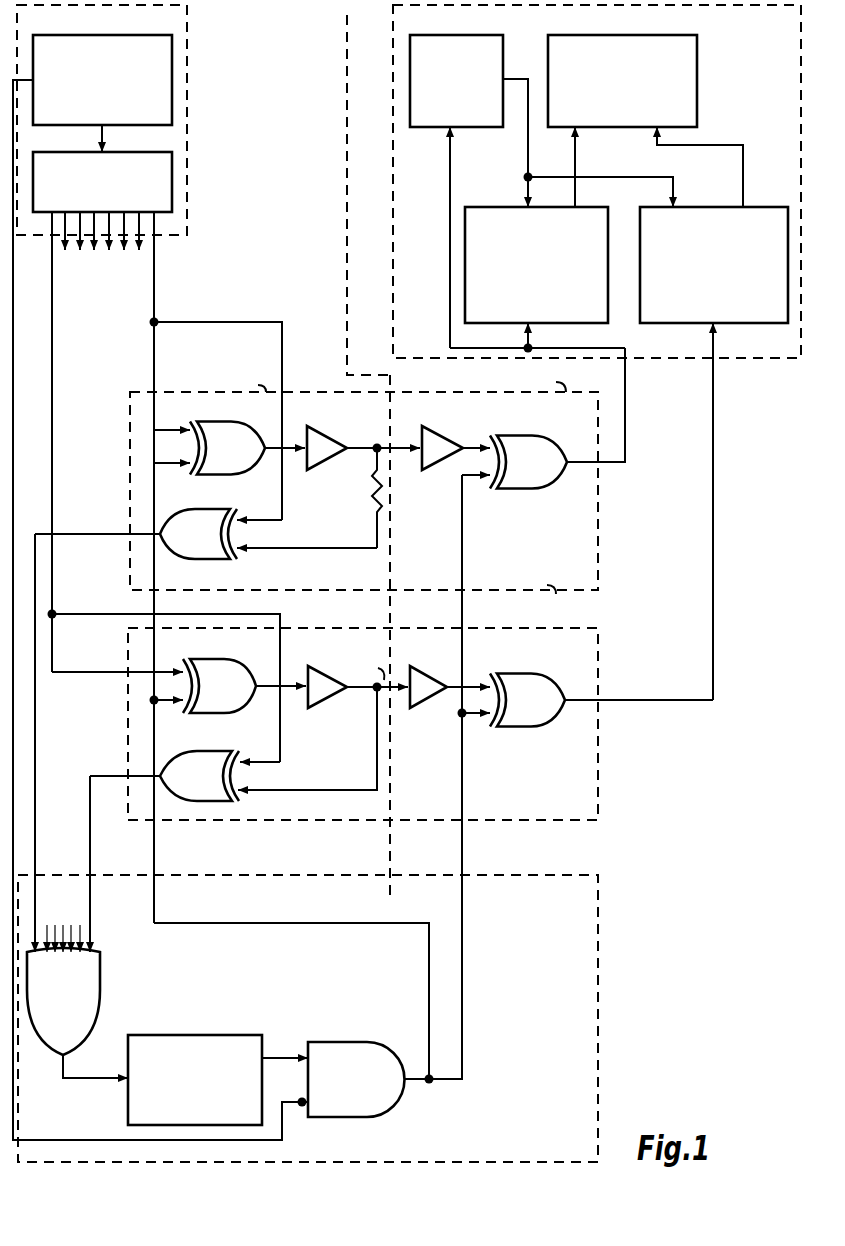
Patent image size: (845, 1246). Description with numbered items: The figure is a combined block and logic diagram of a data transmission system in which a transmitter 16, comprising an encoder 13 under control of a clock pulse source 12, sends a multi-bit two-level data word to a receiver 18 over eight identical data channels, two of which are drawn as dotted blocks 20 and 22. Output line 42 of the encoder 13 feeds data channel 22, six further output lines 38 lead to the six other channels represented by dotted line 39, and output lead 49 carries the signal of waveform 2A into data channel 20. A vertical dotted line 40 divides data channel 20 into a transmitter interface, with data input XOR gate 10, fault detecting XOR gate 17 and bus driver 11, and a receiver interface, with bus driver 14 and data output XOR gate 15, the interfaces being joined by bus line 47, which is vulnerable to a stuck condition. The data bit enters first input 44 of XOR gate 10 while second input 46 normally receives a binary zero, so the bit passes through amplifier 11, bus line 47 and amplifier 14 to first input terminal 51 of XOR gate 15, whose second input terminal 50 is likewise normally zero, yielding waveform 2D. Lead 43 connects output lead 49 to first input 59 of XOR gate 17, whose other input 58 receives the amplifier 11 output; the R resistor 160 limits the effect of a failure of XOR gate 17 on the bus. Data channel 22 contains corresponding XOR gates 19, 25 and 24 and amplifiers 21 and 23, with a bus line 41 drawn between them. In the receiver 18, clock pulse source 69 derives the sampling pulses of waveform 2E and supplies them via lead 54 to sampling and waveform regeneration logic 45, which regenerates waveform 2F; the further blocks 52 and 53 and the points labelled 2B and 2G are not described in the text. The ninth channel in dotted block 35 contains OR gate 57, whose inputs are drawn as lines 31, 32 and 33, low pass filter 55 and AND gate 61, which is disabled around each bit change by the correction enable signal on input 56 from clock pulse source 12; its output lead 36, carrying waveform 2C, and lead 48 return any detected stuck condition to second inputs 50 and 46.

The transmitter 16 is at (187, 28).
The clock pulse source 12 is at (172, 80).
The encoder 13 is at (172, 178).
The additional output lines 38 is at (148, 255).
The output lead of encoder 49 is at (154, 262).
The waveform 2A is at (154, 283).
The output line 42 is at (52, 345).
The input of AND gate 56 is at (13, 440).
The waveform point 2G is at (13, 410).
The lead 43 is at (240, 322).
The data channel 20 is at (333, 392).
The first input terminal 44 is at (172, 414).
The second input terminal 46 is at (166, 460).
The data input Exclusive OR gate 10 is at (266, 426).
The fault detecting Exclusive OR gate 17 is at (196, 516).
The lead 48 is at (160, 518).
The first input of XOR gate 17 59 is at (272, 515).
The second input terminal of XOR gate 17 58 is at (293, 548).
The bus driver or amplifier 11 is at (312, 418).
The bus line 47 is at (390, 444).
The waveform point 2B is at (390, 452).
The resistor 160 is at (372, 490).
The resistor R is at (368, 508).
The vertical dotted line 40 is at (390, 540).
The bus driver or amplifier 14 is at (432, 438).
The first input terminal of XOR gate 15 51 is at (478, 444).
The data output Exclusive OR gate 15 is at (558, 442).
The second input terminal of XOR gate 15 50 is at (474, 482).
The waveform 2D is at (625, 405).
The data channel 22 is at (490, 628).
The dotted line representing six other data channels 39 is at (353, 582).
The receiver 18 is at (392, 36).
The clock pulse source 69 is at (440, 130).
The lead 54 is at (534, 80).
The waveform 2E is at (517, 80).
The utilization means 52 is at (697, 62).
The waveform 2F is at (575, 143).
The sampling and waveform regeneration logic 45 is at (608, 325).
The sampling and waveform regeneration logic 53 is at (745, 207).
The data input Exclusive OR gate 19 is at (262, 662).
The amplifier 21 is at (322, 665).
The bus line 41 is at (370, 698).
The amplifier 23 is at (414, 710).
The data output Exclusive OR gate 24 is at (537, 728).
The fault detecting Exclusive OR gate 25 is at (194, 752).
The line 31 is at (35, 702).
The line 32 is at (90, 856).
The waveform 2C is at (154, 835).
The dotted block 35 is at (332, 875).
The output lead of AND gate 36 is at (462, 868).
The input lines 33 is at (87, 920).
The OR gate 57 is at (100, 985).
The low pass filter 55 is at (236, 1035).
The AND gate 61 is at (358, 1040).